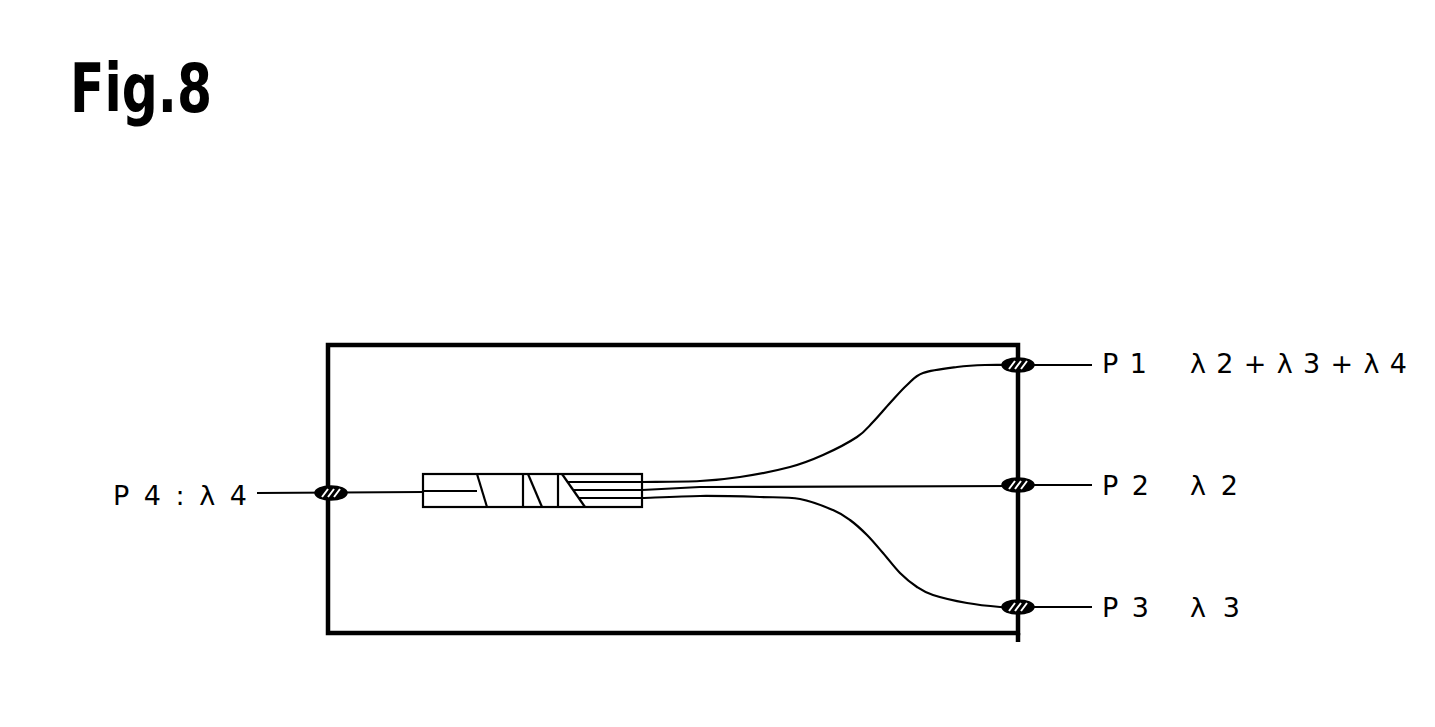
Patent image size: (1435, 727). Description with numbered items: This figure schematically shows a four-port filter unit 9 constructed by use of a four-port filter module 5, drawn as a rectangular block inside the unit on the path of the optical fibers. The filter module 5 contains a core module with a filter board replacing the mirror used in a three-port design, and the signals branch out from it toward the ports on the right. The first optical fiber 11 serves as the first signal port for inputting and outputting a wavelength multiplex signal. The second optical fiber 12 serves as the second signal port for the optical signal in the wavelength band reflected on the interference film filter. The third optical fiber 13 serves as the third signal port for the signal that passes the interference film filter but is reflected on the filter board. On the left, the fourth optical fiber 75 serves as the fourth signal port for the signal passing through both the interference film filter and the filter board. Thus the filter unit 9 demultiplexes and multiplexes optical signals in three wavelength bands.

The four-port filter unit 9 is at (580, 342).
The four-port filter module 5 is at (503, 473).
The first optical fiber 11 is at (887, 410).
The second optical fiber 12 is at (965, 483).
The third optical fiber 13 is at (938, 590).
The fourth optical fiber 75 is at (383, 497).